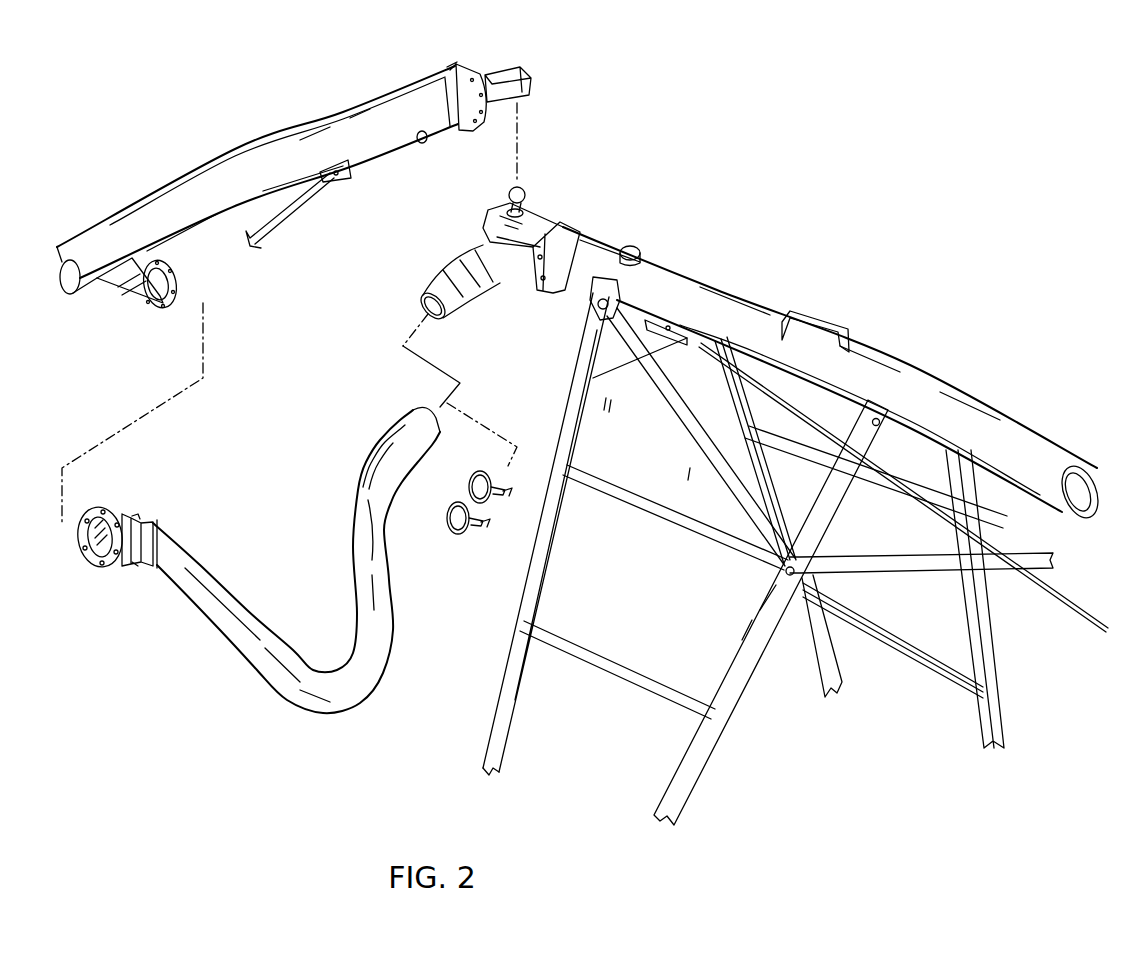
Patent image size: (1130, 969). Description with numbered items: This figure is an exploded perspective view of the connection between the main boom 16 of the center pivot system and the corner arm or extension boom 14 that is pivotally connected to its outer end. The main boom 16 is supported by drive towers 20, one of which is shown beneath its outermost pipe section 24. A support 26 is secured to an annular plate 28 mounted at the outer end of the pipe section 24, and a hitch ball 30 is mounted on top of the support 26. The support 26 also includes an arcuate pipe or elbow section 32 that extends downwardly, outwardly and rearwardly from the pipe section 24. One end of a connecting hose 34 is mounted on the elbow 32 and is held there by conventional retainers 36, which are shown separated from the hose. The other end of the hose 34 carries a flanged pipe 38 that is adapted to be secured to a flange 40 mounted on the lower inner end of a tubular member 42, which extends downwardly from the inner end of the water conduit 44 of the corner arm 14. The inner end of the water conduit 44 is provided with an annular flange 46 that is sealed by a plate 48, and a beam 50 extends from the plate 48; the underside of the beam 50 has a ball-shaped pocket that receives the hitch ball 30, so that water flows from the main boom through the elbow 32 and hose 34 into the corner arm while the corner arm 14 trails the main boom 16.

The corner arm irrigation system 14 is at (222, 124).
The main boom 16 is at (895, 326).
The drive tower 20 is at (545, 579).
The pipe section 24 is at (952, 402).
The support 26 is at (540, 217).
The annular plate 28 is at (586, 243).
The hitch ball 30 is at (525, 193).
The elbow section 32 is at (477, 292).
The connecting hose 34 is at (362, 543).
The retainers 36 is at (467, 471).
The flanged pipe 38 is at (112, 506).
The flange 40 is at (180, 280).
The tubular member 42 is at (133, 283).
The water conduit 44 is at (203, 183).
The annular flange 46 is at (483, 127).
The plate 48 is at (490, 75).
The beam 50 is at (513, 70).